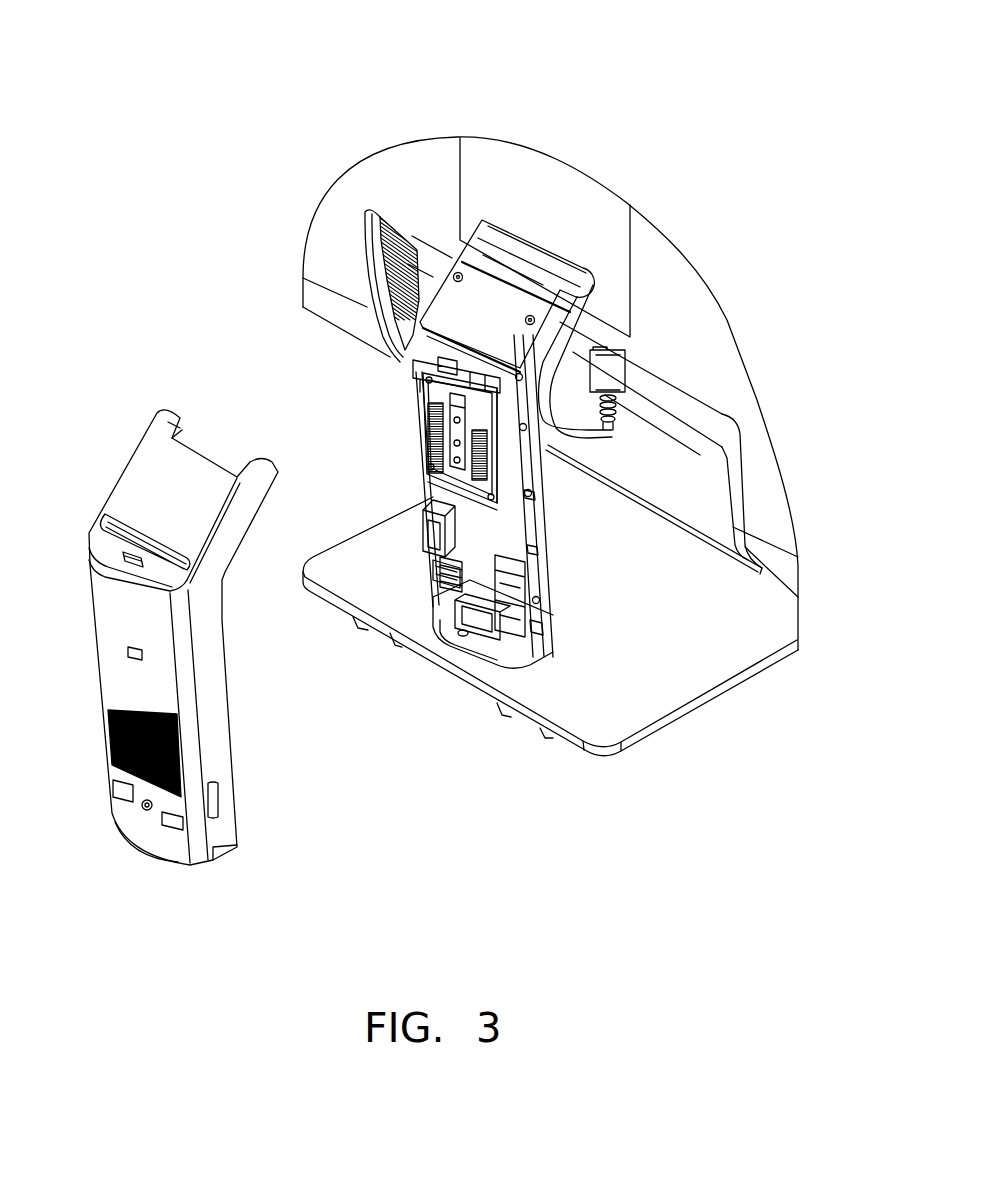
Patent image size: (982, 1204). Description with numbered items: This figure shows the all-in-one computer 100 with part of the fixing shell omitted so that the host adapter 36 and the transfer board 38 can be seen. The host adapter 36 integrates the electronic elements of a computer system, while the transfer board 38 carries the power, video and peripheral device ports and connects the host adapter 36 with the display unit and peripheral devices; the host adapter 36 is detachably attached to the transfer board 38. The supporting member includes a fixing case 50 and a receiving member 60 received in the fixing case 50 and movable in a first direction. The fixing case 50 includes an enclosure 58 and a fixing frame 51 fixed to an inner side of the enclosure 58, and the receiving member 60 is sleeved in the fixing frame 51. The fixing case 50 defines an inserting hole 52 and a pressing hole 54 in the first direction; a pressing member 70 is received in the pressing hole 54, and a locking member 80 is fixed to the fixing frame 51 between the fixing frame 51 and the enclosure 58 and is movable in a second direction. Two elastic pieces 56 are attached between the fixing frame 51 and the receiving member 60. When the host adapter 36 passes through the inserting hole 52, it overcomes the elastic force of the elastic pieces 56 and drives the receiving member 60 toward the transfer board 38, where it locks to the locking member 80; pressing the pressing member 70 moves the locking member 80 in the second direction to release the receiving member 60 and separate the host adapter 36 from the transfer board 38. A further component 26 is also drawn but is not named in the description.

The all-in-one computer 100 is at (599, 57).
The cable 26 is at (622, 432).
The host adapter 36 is at (382, 309).
The transfer board 38 is at (492, 540).
The fixing case 50 is at (292, 652).
The fixing frame 51 is at (480, 523).
The inserting hole 52 is at (150, 560).
The pressing hole 54 is at (130, 555).
The elastic piece 56 is at (490, 490).
The enclosure 58 is at (225, 833).
The receiving member 60 is at (445, 482).
The pressing member 70 is at (413, 372).
The locking member 80 is at (457, 437).